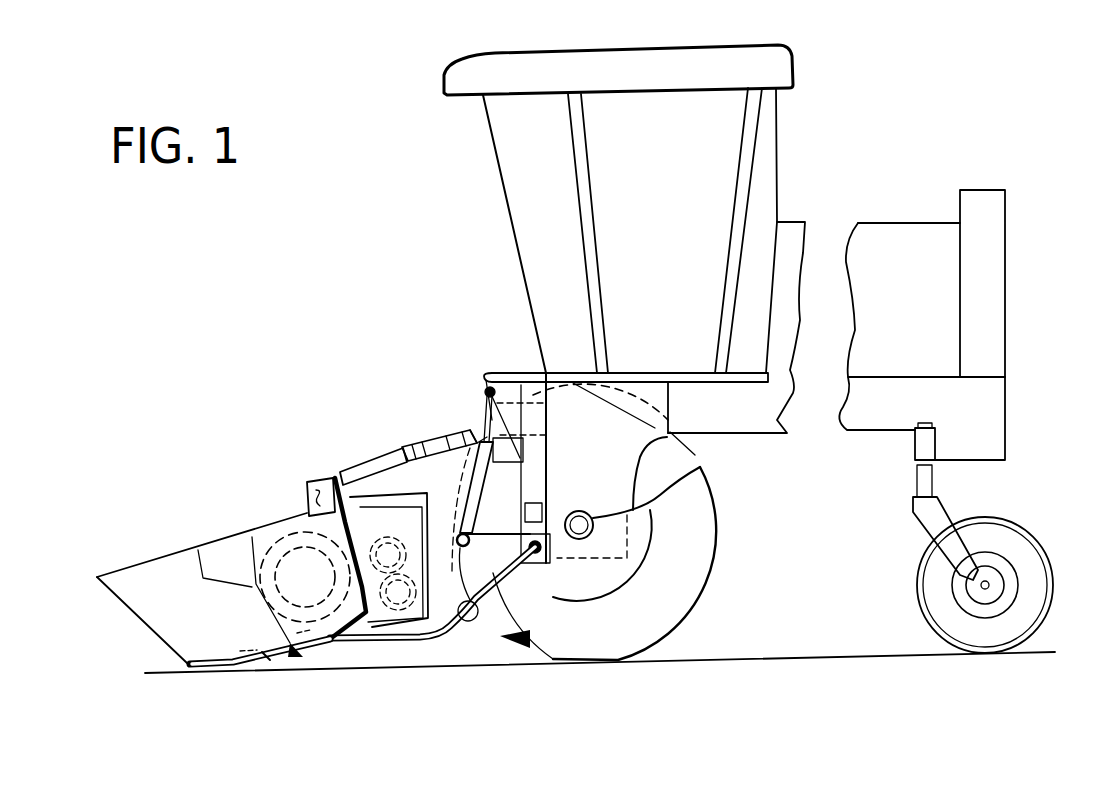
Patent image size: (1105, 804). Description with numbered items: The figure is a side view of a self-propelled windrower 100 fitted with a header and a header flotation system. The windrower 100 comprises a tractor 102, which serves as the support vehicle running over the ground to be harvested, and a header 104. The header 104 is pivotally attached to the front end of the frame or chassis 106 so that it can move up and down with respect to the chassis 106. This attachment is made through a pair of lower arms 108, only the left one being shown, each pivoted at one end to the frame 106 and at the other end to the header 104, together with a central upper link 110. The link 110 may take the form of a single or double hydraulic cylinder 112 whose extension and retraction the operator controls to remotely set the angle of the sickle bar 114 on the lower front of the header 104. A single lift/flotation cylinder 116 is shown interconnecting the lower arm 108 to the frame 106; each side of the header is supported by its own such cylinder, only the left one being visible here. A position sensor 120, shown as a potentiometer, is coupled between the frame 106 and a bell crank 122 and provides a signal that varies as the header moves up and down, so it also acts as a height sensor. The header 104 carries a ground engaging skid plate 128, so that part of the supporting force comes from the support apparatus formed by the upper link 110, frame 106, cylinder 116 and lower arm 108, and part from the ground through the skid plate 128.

The self-propelled windrower 100 is at (426, 180).
The tractor 102 is at (907, 178).
The header 104 is at (329, 405).
The frame or chassis 106 is at (548, 465).
The lower arm 108 is at (445, 623).
The central upper link 110 is at (402, 434).
The hydraulic cylinder 112 is at (445, 436).
The sickle bar 114 is at (272, 670).
The lift/flotation cylinder 116 is at (493, 468).
The position sensor 120 is at (553, 512).
The bell crank 122 is at (532, 645).
The skid plate 128 is at (258, 670).